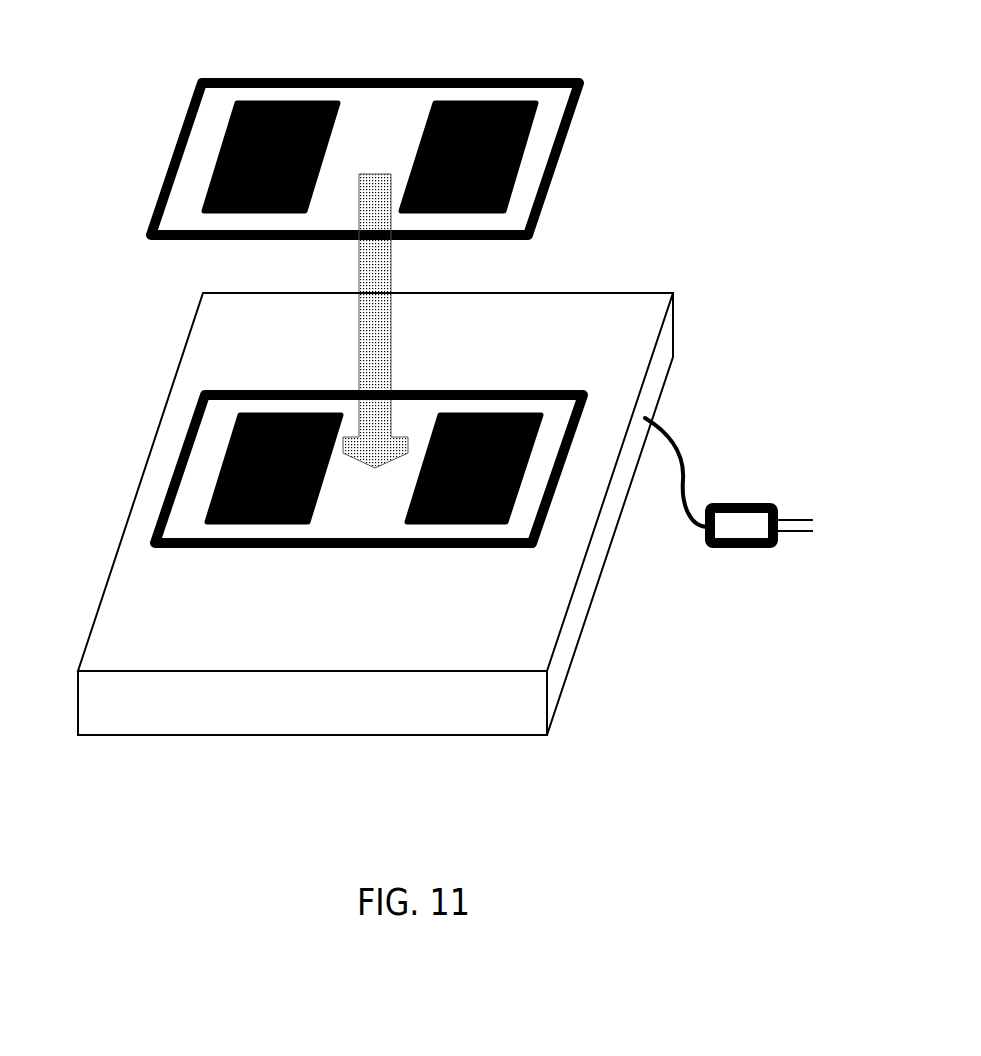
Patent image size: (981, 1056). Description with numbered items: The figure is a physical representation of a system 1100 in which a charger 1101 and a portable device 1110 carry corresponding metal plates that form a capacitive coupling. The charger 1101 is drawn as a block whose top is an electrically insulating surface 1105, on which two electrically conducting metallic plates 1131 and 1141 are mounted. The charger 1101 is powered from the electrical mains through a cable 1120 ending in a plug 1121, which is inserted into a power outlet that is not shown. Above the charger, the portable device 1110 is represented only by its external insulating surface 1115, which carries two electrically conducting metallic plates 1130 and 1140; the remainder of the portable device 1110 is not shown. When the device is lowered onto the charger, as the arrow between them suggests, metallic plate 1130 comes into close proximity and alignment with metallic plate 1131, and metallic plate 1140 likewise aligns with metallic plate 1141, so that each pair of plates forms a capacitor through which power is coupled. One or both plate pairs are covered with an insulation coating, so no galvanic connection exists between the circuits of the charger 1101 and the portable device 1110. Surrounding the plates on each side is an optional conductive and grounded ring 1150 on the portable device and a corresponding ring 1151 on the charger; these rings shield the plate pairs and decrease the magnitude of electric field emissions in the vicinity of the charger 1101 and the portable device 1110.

The system 1100 is at (383, 148).
The portable device 1110 is at (383, 161).
The external insulating surface 1115 is at (387, 115).
The metallic plate 1130 is at (215, 143).
The metallic plate 1140 is at (527, 162).
The conductive and grounded ring 1150 is at (203, 240).
The charger 1101 is at (420, 497).
The electrically insulating surface 1105 is at (285, 356).
The metallic plate 1131 is at (228, 432).
The metallic plate 1141 is at (520, 513).
The conductive and grounded ring 1151 is at (152, 518).
The cable 1120 is at (668, 431).
The plug 1121 is at (733, 557).